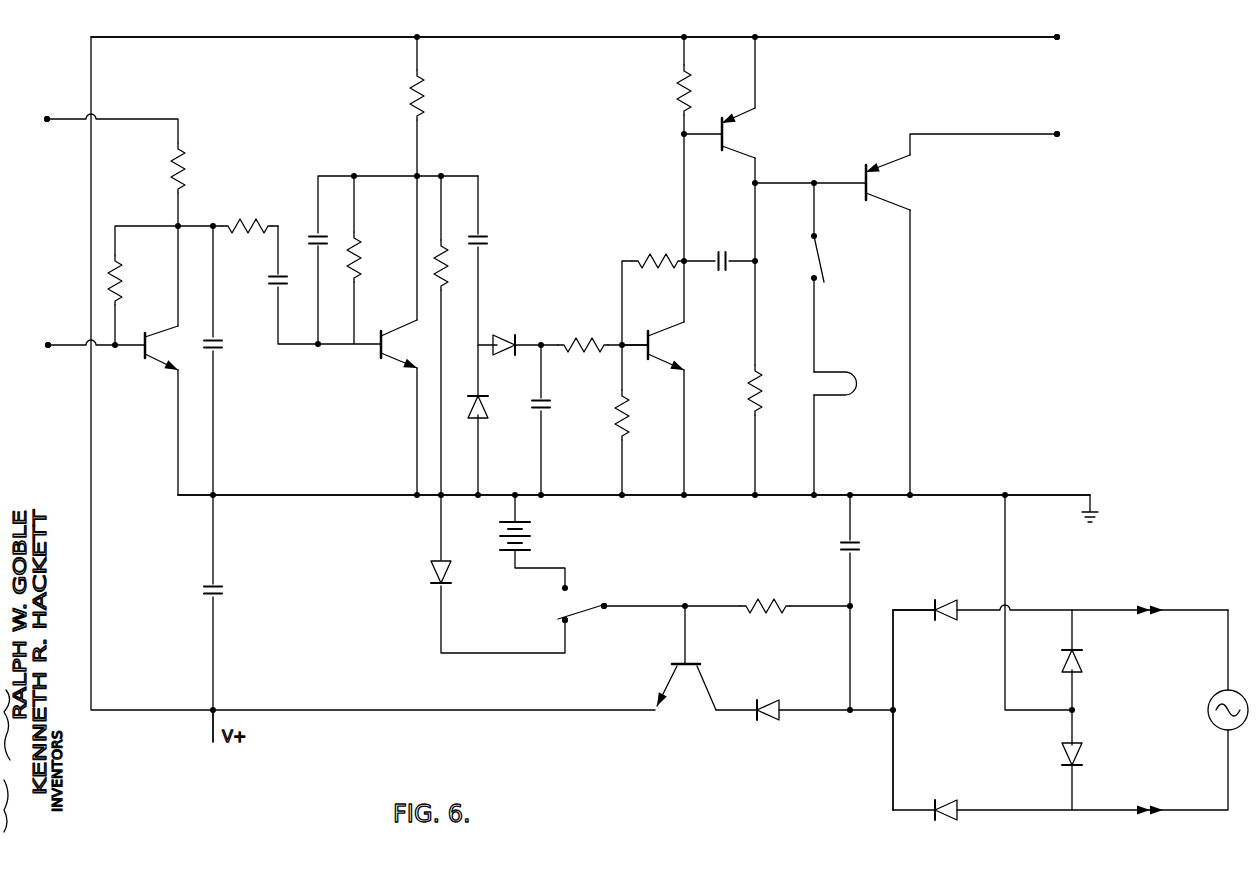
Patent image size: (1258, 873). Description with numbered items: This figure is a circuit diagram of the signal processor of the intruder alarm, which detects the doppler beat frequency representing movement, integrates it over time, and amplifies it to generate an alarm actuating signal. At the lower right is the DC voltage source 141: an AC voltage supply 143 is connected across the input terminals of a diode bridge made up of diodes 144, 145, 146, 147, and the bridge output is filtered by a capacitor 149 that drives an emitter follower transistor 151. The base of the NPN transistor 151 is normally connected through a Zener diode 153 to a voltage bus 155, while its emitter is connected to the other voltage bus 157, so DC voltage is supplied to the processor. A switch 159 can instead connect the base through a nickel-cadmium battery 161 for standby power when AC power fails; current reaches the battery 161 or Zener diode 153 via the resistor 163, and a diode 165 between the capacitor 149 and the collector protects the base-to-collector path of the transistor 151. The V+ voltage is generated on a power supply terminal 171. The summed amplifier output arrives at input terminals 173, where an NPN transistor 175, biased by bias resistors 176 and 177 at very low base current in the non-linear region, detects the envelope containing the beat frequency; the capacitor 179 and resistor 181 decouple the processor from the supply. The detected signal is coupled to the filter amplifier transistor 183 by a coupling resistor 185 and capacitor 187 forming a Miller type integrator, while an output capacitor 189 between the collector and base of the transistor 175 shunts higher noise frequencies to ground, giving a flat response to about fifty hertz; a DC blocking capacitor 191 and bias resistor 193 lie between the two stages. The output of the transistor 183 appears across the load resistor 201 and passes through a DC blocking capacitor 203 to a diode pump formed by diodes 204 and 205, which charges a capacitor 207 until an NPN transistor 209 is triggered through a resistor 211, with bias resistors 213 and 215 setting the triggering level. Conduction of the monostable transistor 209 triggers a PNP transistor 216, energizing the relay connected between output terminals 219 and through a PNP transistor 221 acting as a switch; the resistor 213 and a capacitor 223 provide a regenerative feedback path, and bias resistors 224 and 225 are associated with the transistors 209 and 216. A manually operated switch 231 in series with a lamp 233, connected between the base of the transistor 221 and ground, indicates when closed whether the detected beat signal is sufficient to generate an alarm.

The DC voltage source 141 is at (968, 717).
The AC voltage supply 143 is at (1206, 710).
The diode 144 is at (1086, 660).
The diode 145 is at (1086, 760).
The diode 146 is at (950, 808).
The diode 147 is at (950, 610).
The filtering capacitor 149 is at (854, 546).
The emitter follower transistor 151 is at (702, 662).
The Zener diode 153 is at (434, 575).
The voltage bus 155 is at (332, 496).
The voltage bus 157 is at (228, 37).
The switch 159 is at (580, 620).
The nickel-cadmium battery 161 is at (528, 544).
The resistor 163 is at (770, 607).
The diode 165 is at (772, 705).
The power supply terminal 171 is at (213, 742).
The input terminals 173 is at (47, 120).
The transistor 175 is at (142, 362).
The bias resistor 176 is at (118, 292).
The bias resistor 177 is at (186, 163).
The capacitor 179 is at (216, 590).
The resistor 181 is at (420, 100).
The transistor 183 is at (385, 343).
The coupling resistor 185 is at (245, 224).
The capacitor 187 is at (318, 234).
The output capacitor 189 is at (246, 326).
The DC blocking capacitor 191 is at (276, 278).
The bias resistor 193 is at (358, 240).
The load resistor 201 is at (445, 244).
The DC blocking capacitor 203 is at (482, 240).
The diode 204 is at (483, 408).
The diode 205 is at (505, 340).
The capacitor 207 is at (547, 405).
The transistor 209 is at (656, 347).
The resistor 211 is at (598, 320).
The bias resistor 213 is at (642, 258).
The bias resistor 215 is at (620, 420).
The transistor 216 is at (730, 137).
The output terminals 219 is at (1057, 40).
The transistor 221 is at (872, 181).
The capacitor 223 is at (718, 258).
The bias resistor 224 is at (682, 92).
The bias resistor 225 is at (760, 382).
The manually operated switch 231 is at (825, 268).
The lamp 233 is at (848, 378).